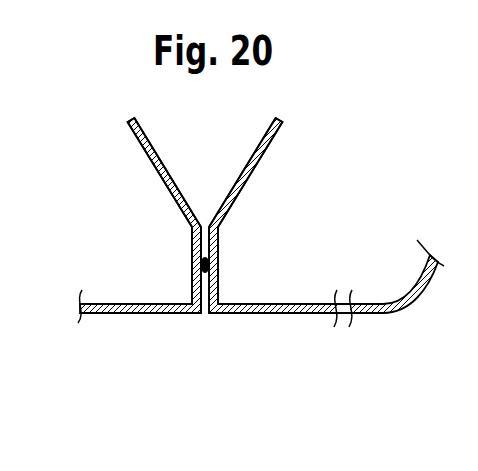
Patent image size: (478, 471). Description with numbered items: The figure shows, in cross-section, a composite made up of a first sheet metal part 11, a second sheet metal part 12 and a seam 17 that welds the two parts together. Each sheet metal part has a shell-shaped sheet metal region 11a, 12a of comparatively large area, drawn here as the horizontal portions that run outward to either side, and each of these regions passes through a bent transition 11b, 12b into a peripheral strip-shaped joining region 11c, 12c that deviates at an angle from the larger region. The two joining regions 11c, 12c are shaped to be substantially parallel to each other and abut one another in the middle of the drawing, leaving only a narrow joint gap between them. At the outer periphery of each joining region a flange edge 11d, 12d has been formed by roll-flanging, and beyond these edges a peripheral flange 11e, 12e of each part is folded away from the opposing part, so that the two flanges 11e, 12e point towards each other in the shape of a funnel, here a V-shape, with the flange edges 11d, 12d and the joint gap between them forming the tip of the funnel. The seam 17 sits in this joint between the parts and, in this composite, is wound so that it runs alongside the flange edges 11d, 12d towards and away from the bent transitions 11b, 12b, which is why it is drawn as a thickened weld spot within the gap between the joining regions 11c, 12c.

The first sheet metal part 11 is at (97, 319).
The sheet metal region 11a is at (133, 313).
The bent transition 11b is at (202, 313).
The joining region 11c is at (193, 283).
The flange edge 11d is at (190, 226).
The flange 11e is at (130, 141).
The second sheet metal part 12 is at (378, 322).
The sheet metal region 12a is at (312, 317).
The bent transition 12b is at (208, 313).
The joining region 12c is at (218, 273).
The flange edge 12d is at (222, 227).
The flange 12e is at (284, 141).
The seam 17 is at (201, 264).